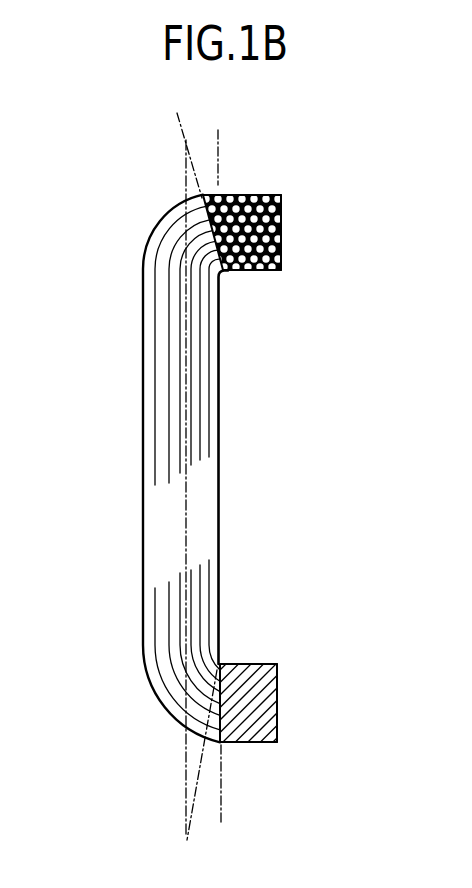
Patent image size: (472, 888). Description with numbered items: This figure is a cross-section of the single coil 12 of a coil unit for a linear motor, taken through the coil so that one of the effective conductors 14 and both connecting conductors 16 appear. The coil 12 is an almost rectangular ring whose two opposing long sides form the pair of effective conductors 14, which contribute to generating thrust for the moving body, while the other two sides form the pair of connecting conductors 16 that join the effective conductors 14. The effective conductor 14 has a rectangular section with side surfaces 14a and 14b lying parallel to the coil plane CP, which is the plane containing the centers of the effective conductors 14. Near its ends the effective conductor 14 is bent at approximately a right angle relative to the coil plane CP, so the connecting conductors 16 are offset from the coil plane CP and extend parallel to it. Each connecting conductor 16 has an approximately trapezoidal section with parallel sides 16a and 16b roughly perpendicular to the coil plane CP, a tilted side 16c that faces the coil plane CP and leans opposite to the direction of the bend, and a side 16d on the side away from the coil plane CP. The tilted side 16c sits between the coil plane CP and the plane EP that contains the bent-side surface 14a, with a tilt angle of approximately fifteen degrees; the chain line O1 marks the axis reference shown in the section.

The single coil 12 is at (303, 290).
The effective conductor 14 is at (220, 479).
The side surface 14a is at (224, 380).
The side surface 14b is at (143, 443).
The connecting conductor 16 is at (227, 464).
The parallel side 16a is at (252, 195).
The parallel side 16b is at (257, 272).
The tilted side 16c is at (212, 230).
The side opposite to the coil plane 16d is at (282, 232).
The coil plane CP is at (185, 163).
The plane including side surface 14a EP is at (218, 130).
The bending axes O1, O2 O1 is at (186, 548).